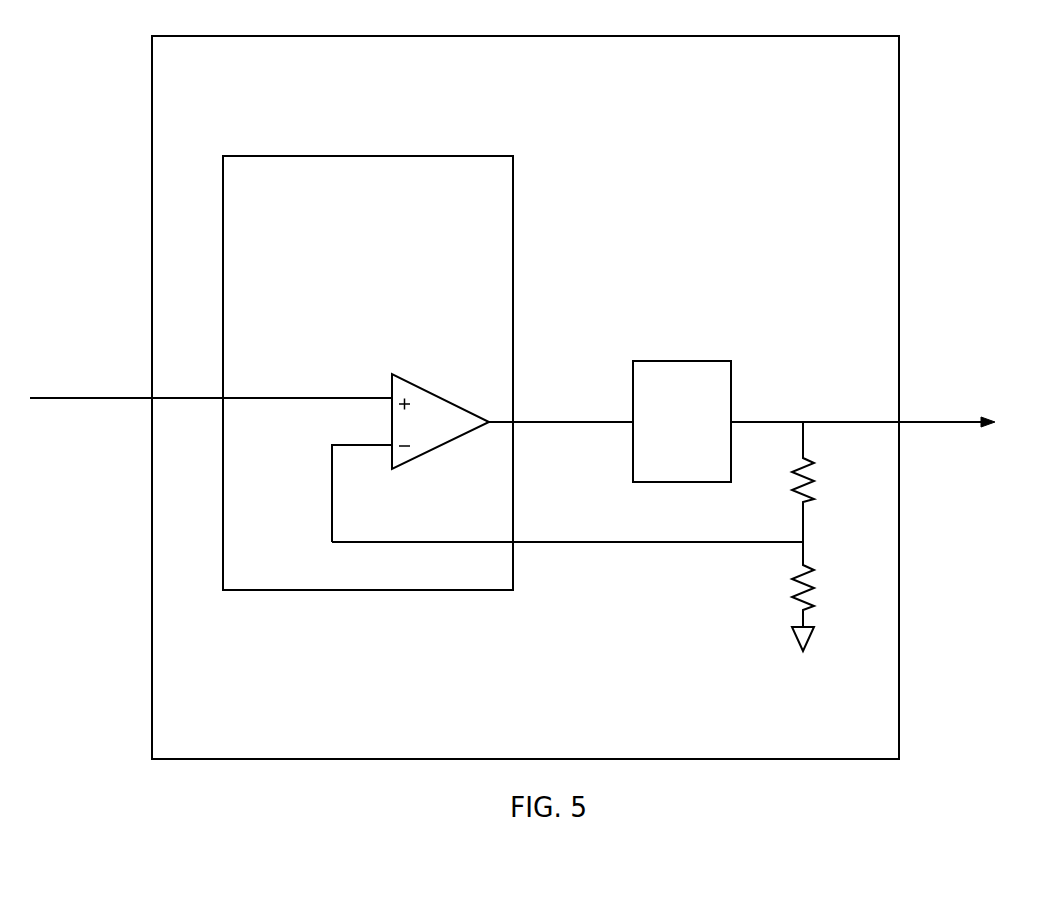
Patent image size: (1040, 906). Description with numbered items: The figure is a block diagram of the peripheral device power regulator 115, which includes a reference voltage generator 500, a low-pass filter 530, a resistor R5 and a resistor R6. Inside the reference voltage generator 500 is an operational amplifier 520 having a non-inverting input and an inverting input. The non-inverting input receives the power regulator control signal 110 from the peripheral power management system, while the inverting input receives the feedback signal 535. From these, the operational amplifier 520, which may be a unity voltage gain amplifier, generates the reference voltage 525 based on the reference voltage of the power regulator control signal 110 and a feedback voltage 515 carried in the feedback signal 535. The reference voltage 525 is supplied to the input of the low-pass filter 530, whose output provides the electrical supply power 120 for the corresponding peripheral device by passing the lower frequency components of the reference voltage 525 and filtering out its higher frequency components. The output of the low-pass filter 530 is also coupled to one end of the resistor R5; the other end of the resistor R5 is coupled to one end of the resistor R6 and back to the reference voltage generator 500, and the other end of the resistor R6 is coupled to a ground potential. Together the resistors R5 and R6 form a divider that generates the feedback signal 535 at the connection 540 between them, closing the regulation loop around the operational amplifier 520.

The peripheral device power regulator 115 is at (525, 397).
The reference voltage generator 500 is at (368, 373).
The power regulator control signal 110 is at (55, 398).
The operational amplifier 520 is at (440, 421).
The feedback voltage 515 is at (332, 470).
The reference voltage 525 is at (537, 421).
The low-pass filter 530 is at (682, 421).
The electrical supply power 120 is at (923, 421).
The feedback signal 535 is at (537, 541).
The connection 540 is at (812, 542).
The resistor R5 is at (821, 482).
The resistor R6 is at (821, 584).